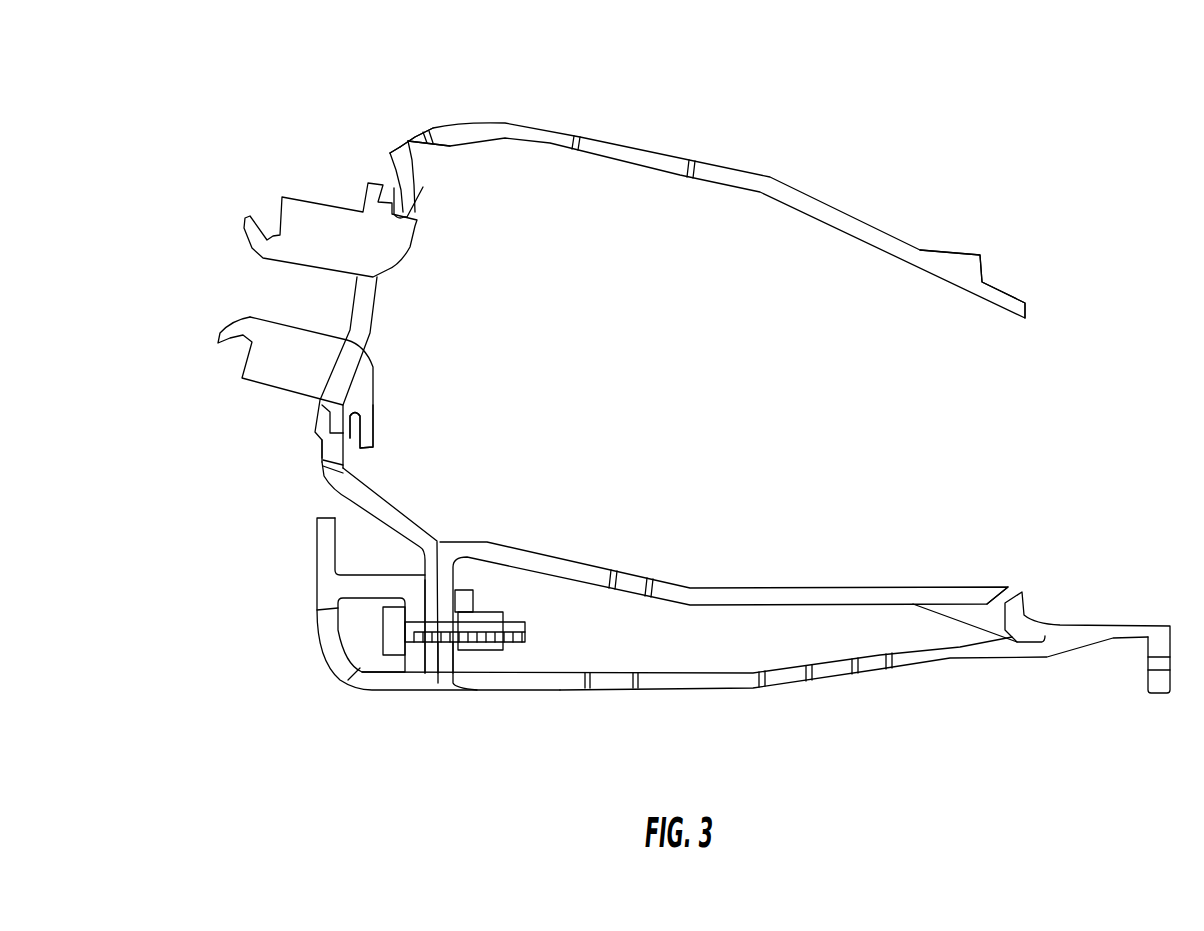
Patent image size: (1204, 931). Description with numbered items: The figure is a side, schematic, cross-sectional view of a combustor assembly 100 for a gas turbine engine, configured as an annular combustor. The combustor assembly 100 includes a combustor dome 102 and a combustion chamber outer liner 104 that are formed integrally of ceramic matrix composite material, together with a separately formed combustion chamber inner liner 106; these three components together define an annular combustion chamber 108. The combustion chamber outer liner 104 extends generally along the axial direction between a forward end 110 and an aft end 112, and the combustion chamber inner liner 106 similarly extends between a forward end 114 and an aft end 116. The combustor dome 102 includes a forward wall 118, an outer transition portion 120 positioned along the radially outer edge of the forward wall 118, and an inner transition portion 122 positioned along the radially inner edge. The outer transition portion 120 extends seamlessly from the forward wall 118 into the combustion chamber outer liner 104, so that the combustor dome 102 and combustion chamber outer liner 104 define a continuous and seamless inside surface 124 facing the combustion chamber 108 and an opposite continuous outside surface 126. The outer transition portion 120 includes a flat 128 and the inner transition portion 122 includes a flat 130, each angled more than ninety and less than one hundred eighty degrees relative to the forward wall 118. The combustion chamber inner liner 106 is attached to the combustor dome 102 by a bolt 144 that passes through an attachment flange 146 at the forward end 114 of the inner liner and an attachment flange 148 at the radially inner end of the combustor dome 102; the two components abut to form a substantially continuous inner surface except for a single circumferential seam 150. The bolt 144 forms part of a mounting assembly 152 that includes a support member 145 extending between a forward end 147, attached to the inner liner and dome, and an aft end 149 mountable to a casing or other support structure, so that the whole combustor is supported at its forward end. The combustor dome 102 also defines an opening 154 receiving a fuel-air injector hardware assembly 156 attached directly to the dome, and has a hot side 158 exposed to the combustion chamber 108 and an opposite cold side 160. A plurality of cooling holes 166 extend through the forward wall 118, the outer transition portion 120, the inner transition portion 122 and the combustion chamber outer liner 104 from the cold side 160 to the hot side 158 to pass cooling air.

The combustor assembly 100 is at (803, 57).
The combustor dome 102 is at (306, 430).
The combustion chamber outer liner 104 is at (733, 165).
The combustion chamber inner liner 106 is at (740, 590).
The combustion chamber 108 is at (692, 384).
The forward end 110 is at (523, 103).
The aft end 112 is at (998, 245).
The forward end 114 is at (488, 527).
The aft end 116 is at (1007, 567).
The forward wall 118 is at (370, 302).
The outer transition portion 120 is at (488, 182).
The inner transition portion 122 is at (437, 490).
The inside surface 124 is at (416, 172).
The outside surface 126 is at (503, 108).
The flat 128 is at (465, 128).
The flat 130 is at (372, 503).
The bolt 144 is at (458, 640).
The support member 145 is at (698, 682).
The attachment flange 146 is at (448, 663).
The forward end 147 is at (499, 703).
The attachment flange 148 is at (432, 663).
The aft end 149 is at (1099, 702).
The seam 150 is at (451, 532).
The mounting assembly 152 is at (786, 743).
The opening 154 is at (356, 320).
The fuel-air injector hardware assembly 156 is at (319, 189).
The hot side 158 is at (396, 427).
The cold side 160 is at (304, 458).
The cooling holes 166 is at (425, 133).